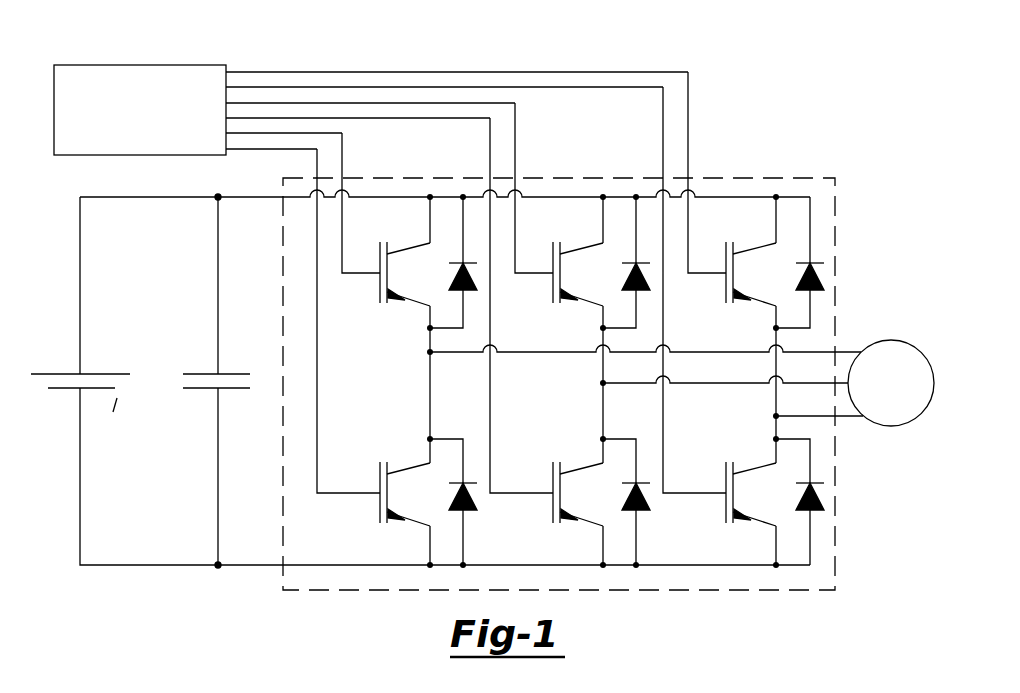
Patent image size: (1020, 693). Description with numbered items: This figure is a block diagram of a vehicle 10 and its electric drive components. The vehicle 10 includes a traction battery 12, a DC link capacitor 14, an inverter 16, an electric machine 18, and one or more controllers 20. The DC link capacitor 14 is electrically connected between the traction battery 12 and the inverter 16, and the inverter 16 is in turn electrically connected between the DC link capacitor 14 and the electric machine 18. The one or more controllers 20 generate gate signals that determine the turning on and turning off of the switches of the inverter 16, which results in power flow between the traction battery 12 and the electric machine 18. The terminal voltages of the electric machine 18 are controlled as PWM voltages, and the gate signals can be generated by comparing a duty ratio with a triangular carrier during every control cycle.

The vehicle 10 is at (795, 130).
The traction battery 12 is at (62, 389).
The DC link capacitor 14 is at (200, 372).
The inverter 16 is at (836, 220).
The electric machine 18 is at (889, 340).
The controller 20 is at (138, 64).